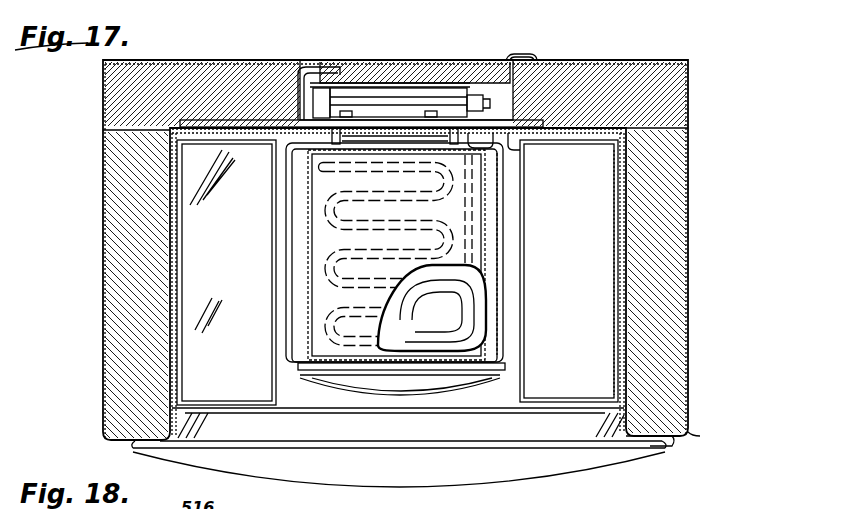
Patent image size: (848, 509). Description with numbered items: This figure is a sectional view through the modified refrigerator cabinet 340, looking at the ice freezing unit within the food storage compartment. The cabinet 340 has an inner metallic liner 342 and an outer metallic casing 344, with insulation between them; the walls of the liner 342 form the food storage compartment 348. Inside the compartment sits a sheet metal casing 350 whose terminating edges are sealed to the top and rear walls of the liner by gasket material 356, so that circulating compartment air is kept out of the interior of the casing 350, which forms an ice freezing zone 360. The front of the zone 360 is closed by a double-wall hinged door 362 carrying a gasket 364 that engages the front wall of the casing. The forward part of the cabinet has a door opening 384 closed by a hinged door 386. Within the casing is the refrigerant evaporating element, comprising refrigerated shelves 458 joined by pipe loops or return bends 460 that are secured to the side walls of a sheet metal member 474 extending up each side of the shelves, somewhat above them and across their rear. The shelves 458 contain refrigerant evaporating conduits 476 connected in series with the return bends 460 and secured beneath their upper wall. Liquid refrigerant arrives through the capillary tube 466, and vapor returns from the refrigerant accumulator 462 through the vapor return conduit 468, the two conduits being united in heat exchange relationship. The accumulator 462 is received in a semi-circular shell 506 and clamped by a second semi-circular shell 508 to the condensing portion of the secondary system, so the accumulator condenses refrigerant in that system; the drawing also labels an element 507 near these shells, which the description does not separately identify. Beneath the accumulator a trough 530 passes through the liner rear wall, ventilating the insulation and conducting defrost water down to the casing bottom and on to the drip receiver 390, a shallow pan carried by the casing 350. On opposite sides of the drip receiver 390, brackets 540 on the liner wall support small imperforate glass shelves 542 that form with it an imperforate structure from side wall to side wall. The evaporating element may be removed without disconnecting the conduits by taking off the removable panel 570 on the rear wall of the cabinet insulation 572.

The cabinet 340 is at (688, 434).
The inner metallic liner 342 is at (632, 212).
The outer metallic casing 344 is at (688, 230).
The food storage compartment 348 is at (608, 330).
The sheet metal casing 350 is at (510, 268).
The gasket material 356 is at (515, 136).
The ice freezing zone 360 is at (500, 288).
The hinged door 362 is at (353, 388).
The gasket 364 is at (405, 380).
The door opening 384 is at (672, 437).
The hinged door 386 is at (598, 457).
The drip receiver 390 is at (281, 272).
The refrigerated shelves 458 is at (332, 348).
The pipe loops 460 is at (492, 248).
The refrigerant accumulator 462 is at (312, 66).
The capillary tube 466 is at (330, 78).
The vapor return conduit 468 is at (322, 72).
The sheet metal member 474 is at (300, 241).
The refrigerant evaporating conduits 476 is at (453, 303).
The semi-circular shell 506 is at (382, 113).
The top plate 507 is at (208, 127).
The semi-circular shell 508 is at (410, 97).
The trough 530 is at (452, 80).
The brackets 540 is at (176, 293).
The imperforate shelves 542 is at (196, 312).
The removable panel 570 is at (516, 60).
The cabinet insulation 572 is at (505, 58).